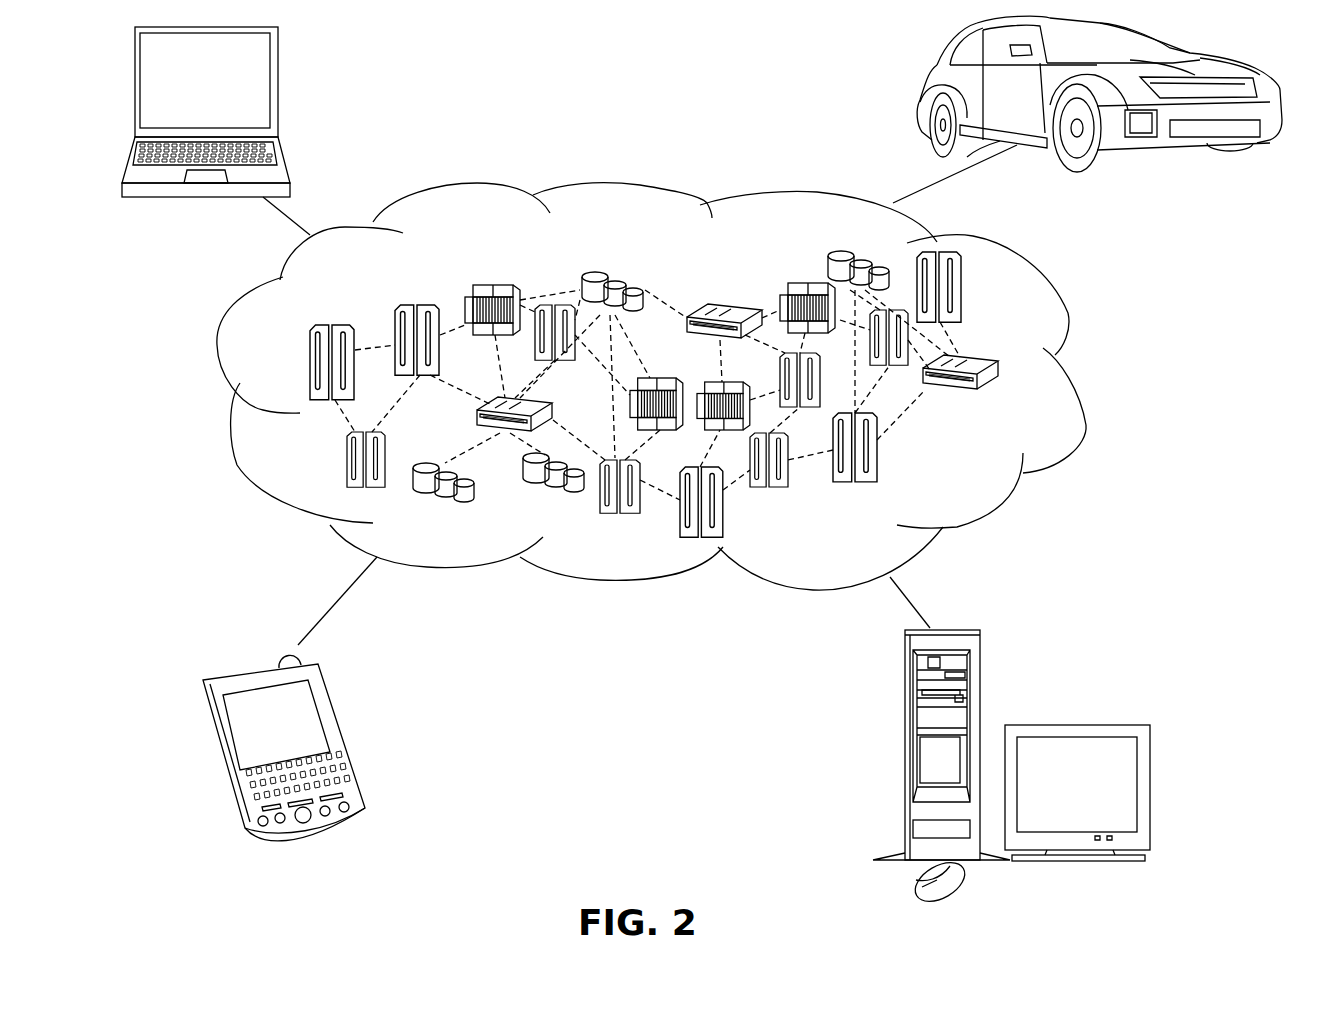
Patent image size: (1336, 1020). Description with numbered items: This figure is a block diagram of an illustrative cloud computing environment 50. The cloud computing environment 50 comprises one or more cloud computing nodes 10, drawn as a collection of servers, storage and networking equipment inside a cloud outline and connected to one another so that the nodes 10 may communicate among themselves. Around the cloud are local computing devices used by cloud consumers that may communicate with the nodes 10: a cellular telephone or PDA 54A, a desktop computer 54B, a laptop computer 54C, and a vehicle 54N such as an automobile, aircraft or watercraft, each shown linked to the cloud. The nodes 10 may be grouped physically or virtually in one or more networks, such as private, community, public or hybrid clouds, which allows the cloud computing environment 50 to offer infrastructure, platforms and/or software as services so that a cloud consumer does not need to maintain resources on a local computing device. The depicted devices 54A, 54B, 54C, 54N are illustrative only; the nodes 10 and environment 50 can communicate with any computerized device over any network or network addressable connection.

The cloud computing environment 50 is at (1072, 375).
The cloud computing node 10 is at (983, 478).
The cellular telephone or PDA 54A is at (333, 705).
The desktop computer 54B is at (903, 690).
The laptop computer 54C is at (278, 67).
The vehicle 54N is at (920, 85).